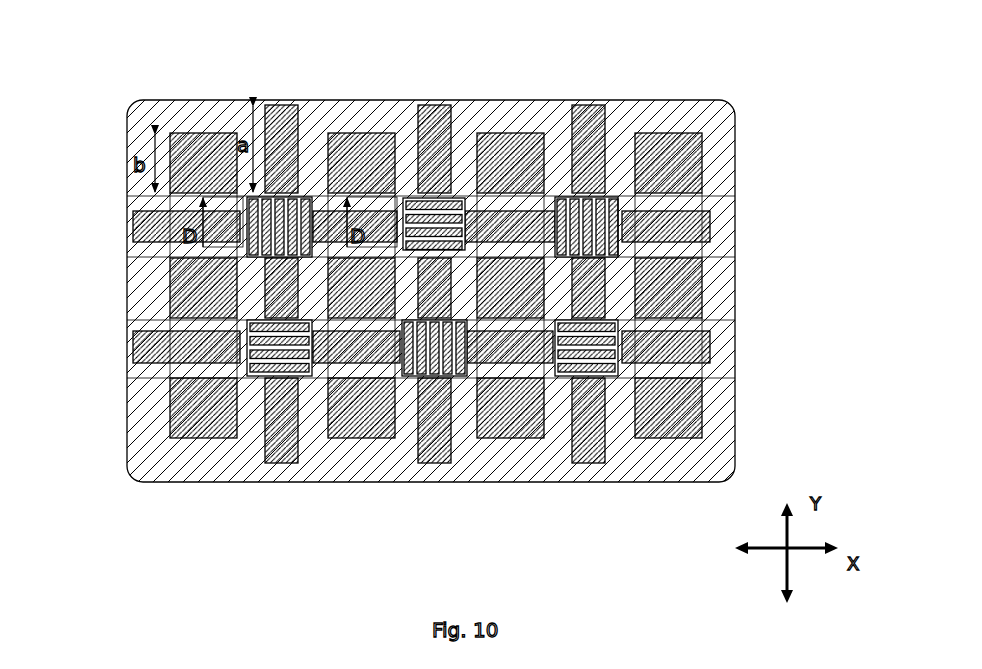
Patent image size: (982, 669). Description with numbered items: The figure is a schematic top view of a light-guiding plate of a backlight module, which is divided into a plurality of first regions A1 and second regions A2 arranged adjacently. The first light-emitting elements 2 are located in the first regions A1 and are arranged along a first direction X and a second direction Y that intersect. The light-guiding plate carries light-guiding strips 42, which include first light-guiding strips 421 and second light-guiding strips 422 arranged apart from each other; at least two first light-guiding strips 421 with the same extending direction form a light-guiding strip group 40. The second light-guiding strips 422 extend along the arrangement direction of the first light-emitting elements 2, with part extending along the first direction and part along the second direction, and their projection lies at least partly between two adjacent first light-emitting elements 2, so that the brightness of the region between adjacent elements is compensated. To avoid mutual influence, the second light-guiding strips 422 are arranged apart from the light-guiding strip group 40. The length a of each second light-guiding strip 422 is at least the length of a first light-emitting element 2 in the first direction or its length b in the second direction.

The first light-emitting element 2 is at (715, 130).
The light-guiding strip group 40 is at (455, 197).
The light-guiding strip 42 is at (463, 261).
The first light-guiding strip 421 is at (622, 232).
The second light-guiding strip 422 is at (663, 260).
The first region A1 is at (188, 293).
The second region A2 is at (243, 368).